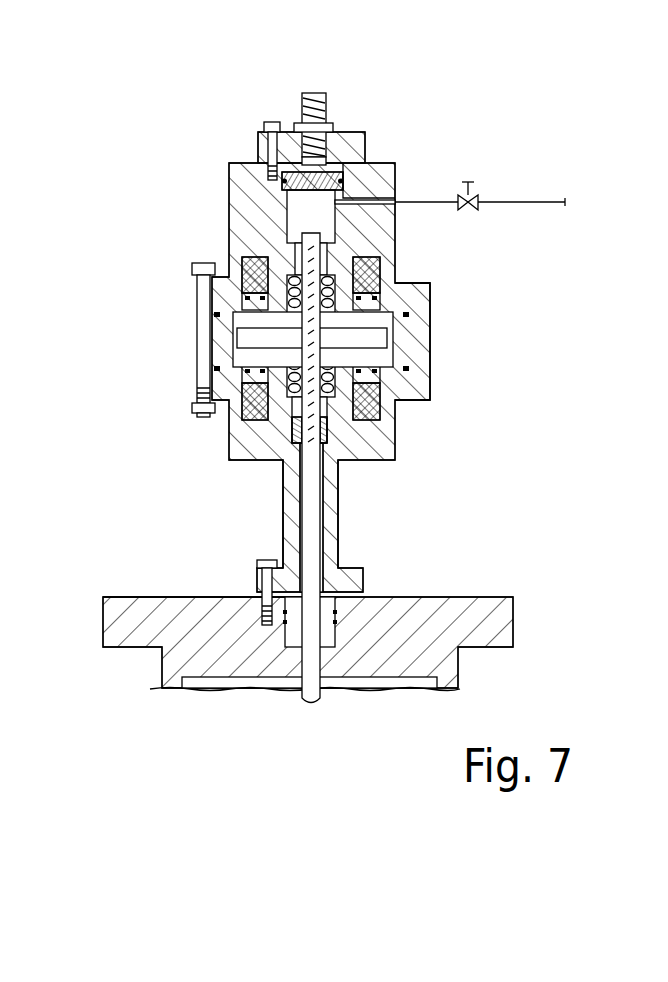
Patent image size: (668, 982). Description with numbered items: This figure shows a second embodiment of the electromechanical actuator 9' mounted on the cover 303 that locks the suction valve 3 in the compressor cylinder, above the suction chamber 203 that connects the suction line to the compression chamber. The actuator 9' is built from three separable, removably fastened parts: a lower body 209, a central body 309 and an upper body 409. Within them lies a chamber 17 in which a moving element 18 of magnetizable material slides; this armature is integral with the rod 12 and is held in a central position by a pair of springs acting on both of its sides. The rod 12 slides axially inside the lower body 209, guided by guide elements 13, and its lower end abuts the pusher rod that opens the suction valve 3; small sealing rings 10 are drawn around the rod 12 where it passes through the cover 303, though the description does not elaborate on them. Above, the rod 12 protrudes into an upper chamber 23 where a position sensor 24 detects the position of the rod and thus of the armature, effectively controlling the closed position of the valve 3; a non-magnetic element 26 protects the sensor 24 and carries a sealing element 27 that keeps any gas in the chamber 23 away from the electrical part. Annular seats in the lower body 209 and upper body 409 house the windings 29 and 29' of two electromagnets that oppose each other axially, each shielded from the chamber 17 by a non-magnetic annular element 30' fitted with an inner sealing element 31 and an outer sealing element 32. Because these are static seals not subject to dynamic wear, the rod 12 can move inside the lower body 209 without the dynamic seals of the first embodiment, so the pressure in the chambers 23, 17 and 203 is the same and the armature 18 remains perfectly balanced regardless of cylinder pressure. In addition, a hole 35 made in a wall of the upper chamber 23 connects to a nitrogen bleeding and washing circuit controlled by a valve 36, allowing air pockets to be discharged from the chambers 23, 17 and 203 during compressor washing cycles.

The suction valve 3 is at (528, 619).
The electromechanical actuator 9' is at (263, 377).
The seal rings 10 is at (337, 621).
The rod 12 is at (307, 702).
The guide elements 13 is at (297, 432).
The chamber 17 is at (243, 320).
The moving element 18 is at (243, 340).
The upper chamber 23 is at (296, 214).
The position sensor 24 is at (325, 98).
The protective element 26 is at (302, 178).
The sealing element 27 is at (284, 183).
The winding 29 is at (402, 414).
The winding 29' is at (372, 264).
The non-magnetic annular element 30' is at (162, 337).
The inner sealing element 31 is at (408, 318).
The outer sealing element 32 is at (392, 297).
The hole 35 is at (373, 200).
The valve 36 is at (478, 200).
The suction chamber 203 is at (210, 685).
The lower body 209 is at (385, 448).
The cover 303 is at (130, 605).
The central body 309 is at (422, 348).
The upper body 409 is at (372, 172).